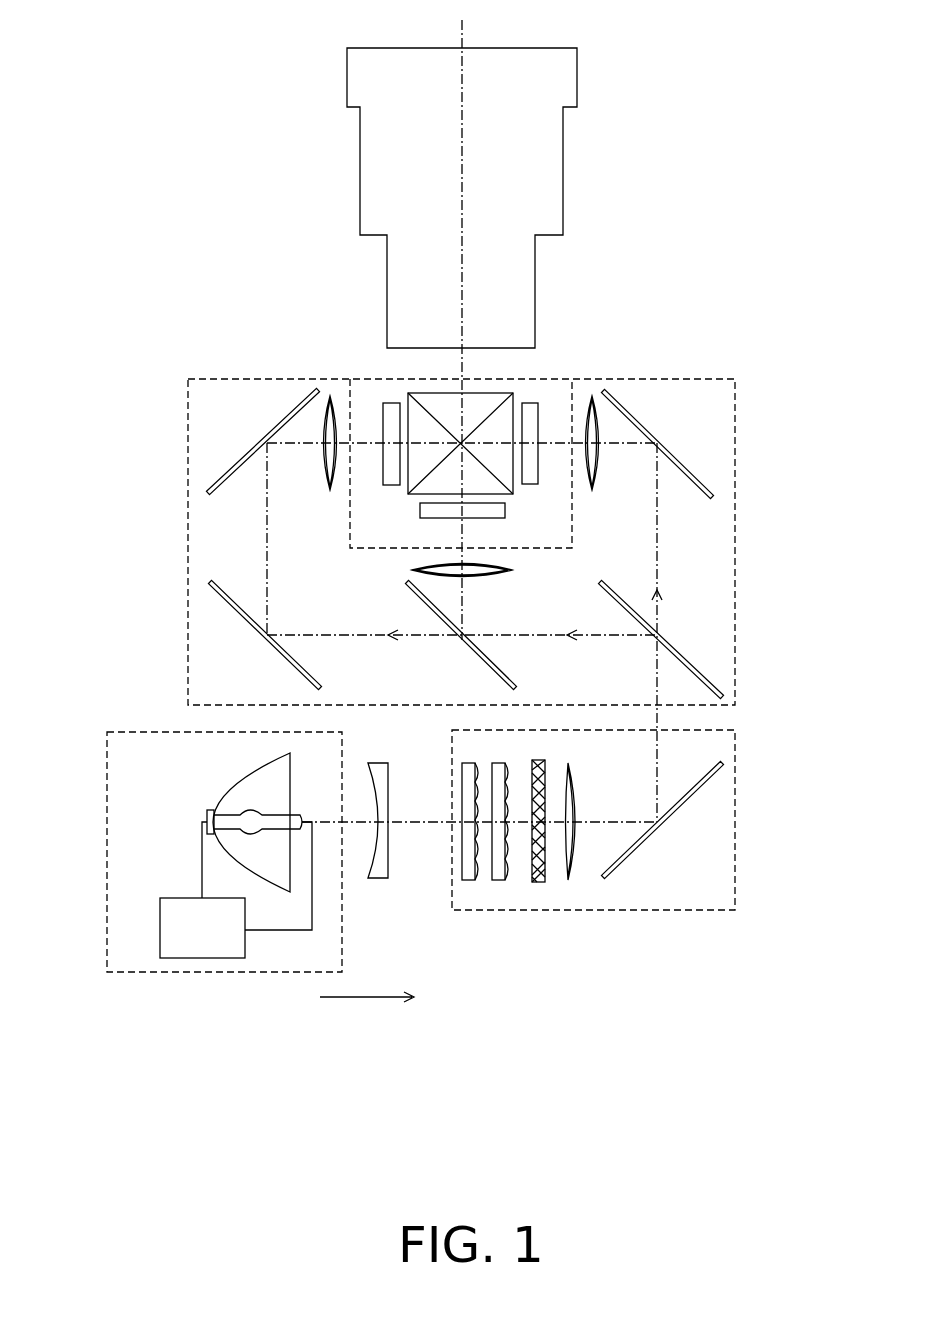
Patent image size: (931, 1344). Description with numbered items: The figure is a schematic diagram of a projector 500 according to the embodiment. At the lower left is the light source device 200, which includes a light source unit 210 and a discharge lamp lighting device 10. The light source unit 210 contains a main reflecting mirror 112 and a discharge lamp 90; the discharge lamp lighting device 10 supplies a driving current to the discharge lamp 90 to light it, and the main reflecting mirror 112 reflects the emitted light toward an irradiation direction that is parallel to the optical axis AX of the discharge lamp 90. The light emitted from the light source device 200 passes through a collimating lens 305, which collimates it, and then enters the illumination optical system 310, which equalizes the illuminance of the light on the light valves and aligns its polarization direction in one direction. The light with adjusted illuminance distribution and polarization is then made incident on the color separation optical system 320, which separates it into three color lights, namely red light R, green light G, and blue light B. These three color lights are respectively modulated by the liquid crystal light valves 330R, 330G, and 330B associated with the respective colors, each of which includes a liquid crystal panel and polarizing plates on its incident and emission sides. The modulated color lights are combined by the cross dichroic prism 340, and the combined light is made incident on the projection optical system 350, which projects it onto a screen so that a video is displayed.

The projector 500 is at (650, 31).
The projection optical system 350 is at (565, 200).
The cross dichroic prism 340 is at (446, 392).
The liquid crystal light valve 330R is at (540, 380).
The liquid crystal light valve 330G is at (505, 514).
The liquid crystal light valve 330B is at (390, 487).
The color separation optical system 320 is at (740, 684).
The illumination optical system 310 is at (740, 872).
The collimating lens 305 is at (380, 882).
The light source device 200 is at (192, 975).
The light source unit 210 is at (197, 795).
The main reflecting mirror 112 is at (232, 787).
The discharge lamp 90 is at (296, 812).
The discharge lamp lighting device 10 is at (160, 937).
The optical axis AX is at (430, 822).
The blue light B is at (265, 562).
The green light G is at (462, 585).
The red light R is at (660, 555).